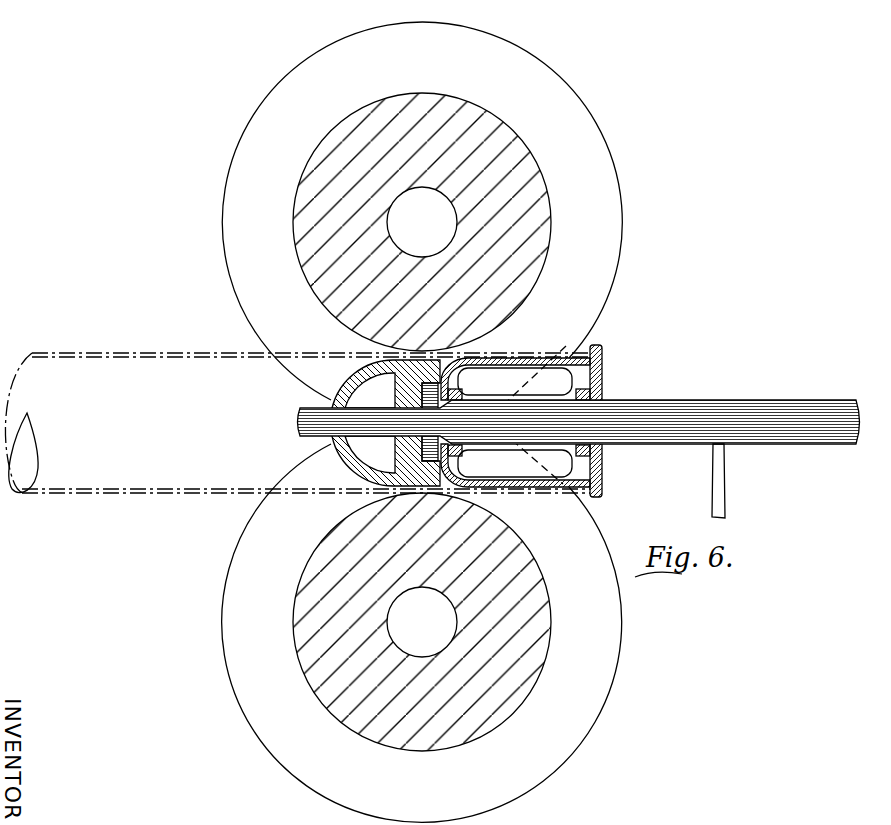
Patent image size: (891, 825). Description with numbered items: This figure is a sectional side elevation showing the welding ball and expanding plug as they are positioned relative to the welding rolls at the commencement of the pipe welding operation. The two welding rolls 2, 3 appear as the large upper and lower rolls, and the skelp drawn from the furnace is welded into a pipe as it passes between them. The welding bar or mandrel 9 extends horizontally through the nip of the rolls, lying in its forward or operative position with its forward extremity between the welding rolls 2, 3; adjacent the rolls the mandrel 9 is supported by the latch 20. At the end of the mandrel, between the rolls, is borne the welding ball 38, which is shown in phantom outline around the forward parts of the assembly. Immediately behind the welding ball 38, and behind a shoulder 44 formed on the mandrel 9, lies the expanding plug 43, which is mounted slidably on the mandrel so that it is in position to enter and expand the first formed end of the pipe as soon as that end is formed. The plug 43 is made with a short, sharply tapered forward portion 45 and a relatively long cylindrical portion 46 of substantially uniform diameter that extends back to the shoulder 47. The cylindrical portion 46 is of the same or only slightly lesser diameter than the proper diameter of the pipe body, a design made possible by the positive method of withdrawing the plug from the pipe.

The welding roll 2 is at (621, 262).
The welding roll 3 is at (621, 674).
The welding bar or mandrel 9 is at (738, 399).
The latch 20 is at (743, 487).
The welding ball 38 is at (333, 464).
The expanding plug 43 is at (605, 374).
The shoulder 44 is at (428, 384).
The tapered forward portion 45 is at (456, 489).
The cylindrical portion 46 is at (566, 346).
The shoulder 47 is at (605, 499).